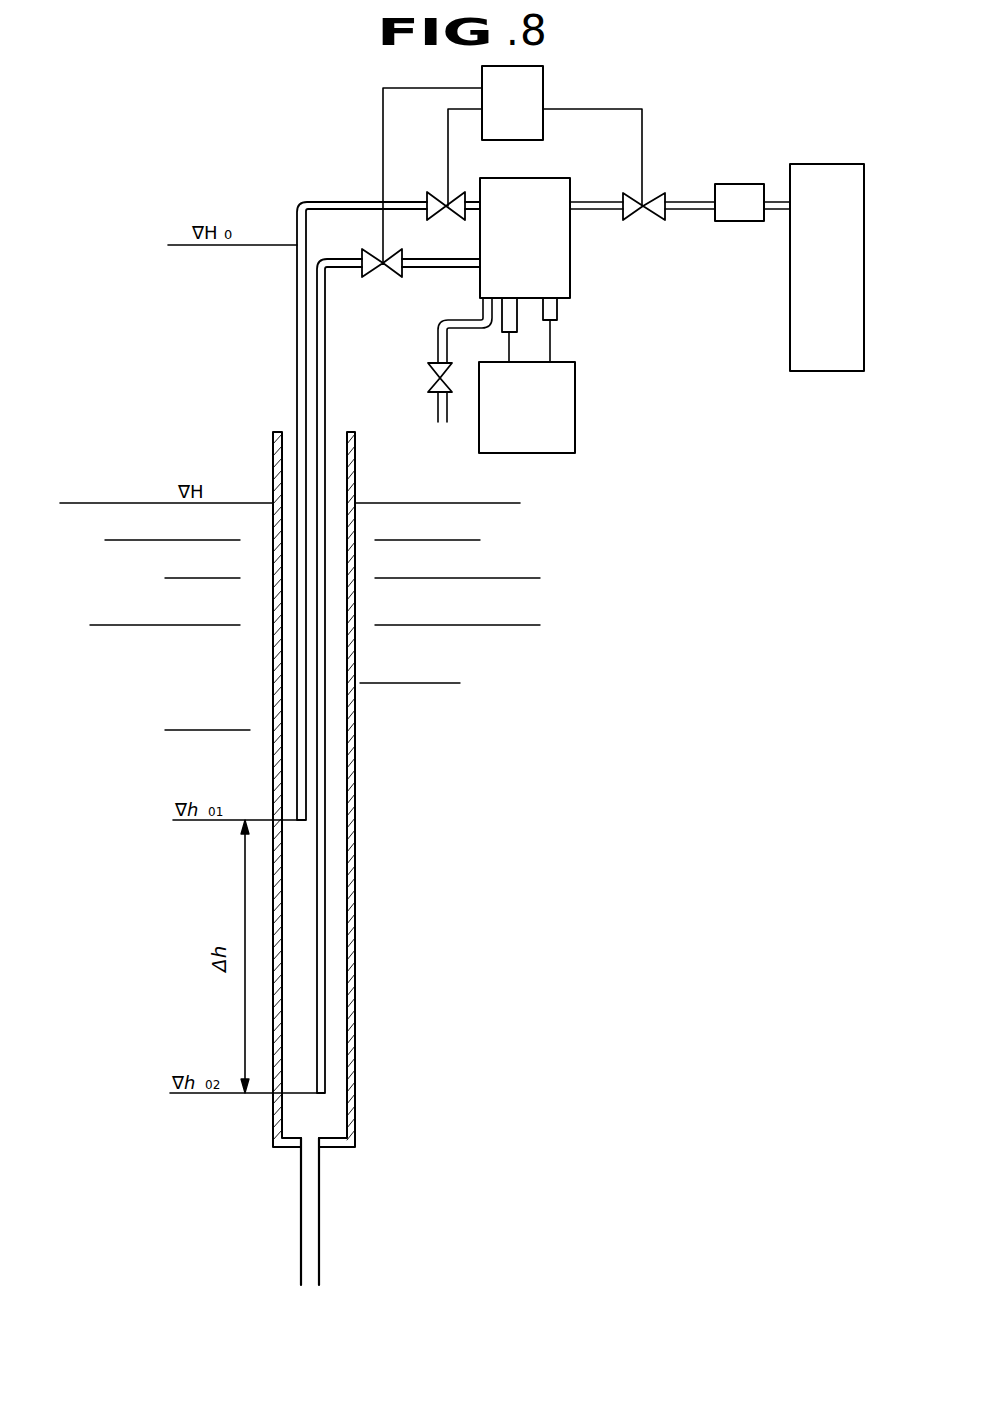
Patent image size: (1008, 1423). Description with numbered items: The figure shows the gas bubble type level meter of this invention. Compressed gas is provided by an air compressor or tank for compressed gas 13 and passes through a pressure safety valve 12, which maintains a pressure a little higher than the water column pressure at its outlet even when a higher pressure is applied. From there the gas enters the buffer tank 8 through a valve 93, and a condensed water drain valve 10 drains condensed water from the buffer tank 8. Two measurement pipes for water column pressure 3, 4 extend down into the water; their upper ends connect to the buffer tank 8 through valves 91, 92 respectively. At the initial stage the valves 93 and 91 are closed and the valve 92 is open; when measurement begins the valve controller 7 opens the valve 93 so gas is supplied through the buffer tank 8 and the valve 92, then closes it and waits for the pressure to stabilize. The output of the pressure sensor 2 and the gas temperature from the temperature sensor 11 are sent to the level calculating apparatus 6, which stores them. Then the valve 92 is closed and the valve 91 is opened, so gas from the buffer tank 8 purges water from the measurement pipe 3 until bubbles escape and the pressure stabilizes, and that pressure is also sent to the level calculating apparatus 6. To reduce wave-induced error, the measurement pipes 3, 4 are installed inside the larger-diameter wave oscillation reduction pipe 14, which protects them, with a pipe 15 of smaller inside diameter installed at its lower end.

The pressure sensor 2 is at (500, 322).
The measurement pipe for water column pressure 3 is at (302, 680).
The measurement pipe for water column pressure 4 is at (318, 712).
The level calculating apparatus 6 is at (527, 407).
The valve controller 7 is at (512, 103).
The buffer tank 8 is at (525, 238).
The valve 91 is at (440, 199).
The valve 92 is at (368, 267).
The valve 93 is at (660, 203).
The condensed water drain valve 10 is at (433, 375).
The temperature sensor 11 is at (557, 307).
The pressure safety valve 12 is at (737, 210).
The air compressor or tank for compressed gas 13 is at (827, 267).
The protection pipe 14 is at (352, 922).
The pipe 15 is at (308, 1222).